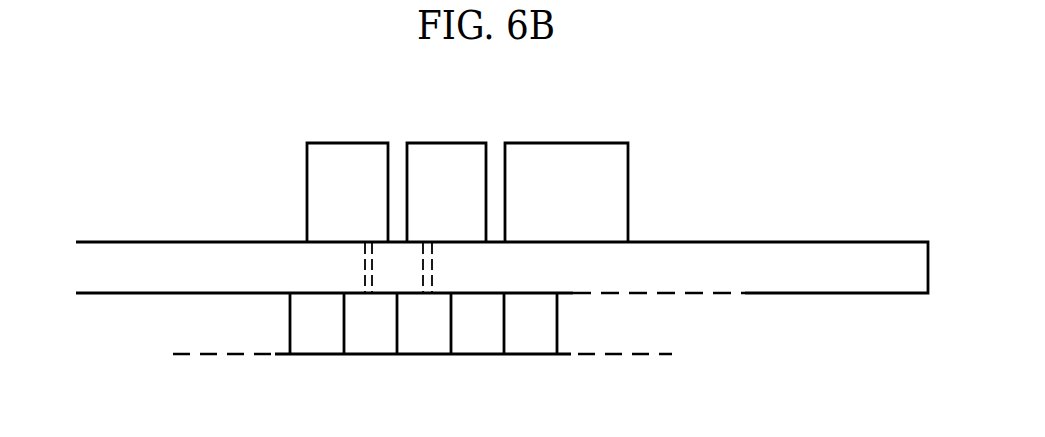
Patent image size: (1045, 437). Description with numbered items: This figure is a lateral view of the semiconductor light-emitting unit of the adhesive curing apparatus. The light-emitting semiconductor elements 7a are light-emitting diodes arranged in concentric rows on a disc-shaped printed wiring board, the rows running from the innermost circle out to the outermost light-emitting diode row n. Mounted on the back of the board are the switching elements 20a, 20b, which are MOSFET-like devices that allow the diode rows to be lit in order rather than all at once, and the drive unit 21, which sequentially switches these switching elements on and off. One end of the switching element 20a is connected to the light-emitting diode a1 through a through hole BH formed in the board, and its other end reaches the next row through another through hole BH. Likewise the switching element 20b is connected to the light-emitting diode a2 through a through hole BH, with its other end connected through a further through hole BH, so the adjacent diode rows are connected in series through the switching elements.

The light-emitting semiconductor element 7a is at (747, 246).
The switching element 20a is at (350, 147).
The switching element 20b is at (450, 147).
The drive unit 21 is at (597, 147).
The through hole BH is at (423, 272).
The light-emitting diode row n is at (359, 323).
The light-emitting diode a1 is at (375, 338).
The light-emitting diode a2 is at (427, 338).